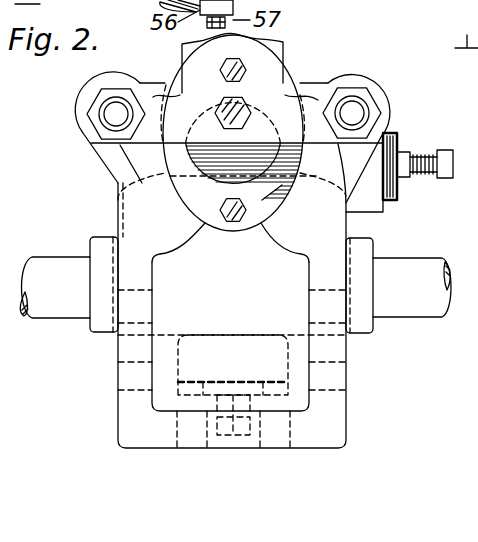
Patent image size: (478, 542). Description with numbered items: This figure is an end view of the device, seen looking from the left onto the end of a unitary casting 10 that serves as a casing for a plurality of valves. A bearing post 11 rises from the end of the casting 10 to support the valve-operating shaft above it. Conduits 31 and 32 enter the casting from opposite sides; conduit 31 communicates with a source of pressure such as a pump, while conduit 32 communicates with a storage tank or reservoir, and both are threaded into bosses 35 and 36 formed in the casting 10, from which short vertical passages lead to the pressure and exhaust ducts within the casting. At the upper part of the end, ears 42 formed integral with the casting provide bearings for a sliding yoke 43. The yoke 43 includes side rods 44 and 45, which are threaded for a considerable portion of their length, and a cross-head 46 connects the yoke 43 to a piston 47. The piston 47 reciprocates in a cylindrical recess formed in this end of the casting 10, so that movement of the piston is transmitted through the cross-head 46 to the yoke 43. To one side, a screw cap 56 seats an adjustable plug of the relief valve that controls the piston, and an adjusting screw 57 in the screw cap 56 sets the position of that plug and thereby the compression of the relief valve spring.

The unitary casting 10 is at (120, 346).
The bearing post 11 is at (283, 48).
The conduit 31 is at (47, 262).
The conduit 32 is at (415, 313).
The boss 35 is at (100, 242).
The boss 36 is at (370, 252).
The ear 42 is at (112, 82).
The sliding yoke 43 is at (90, 133).
The side rod 44 is at (108, 112).
The side rod 45 is at (356, 112).
The cross-head 46 is at (155, 90).
The piston 47 is at (195, 192).
The screw cap 56 is at (392, 190).
The adjusting screw 57 is at (430, 143).